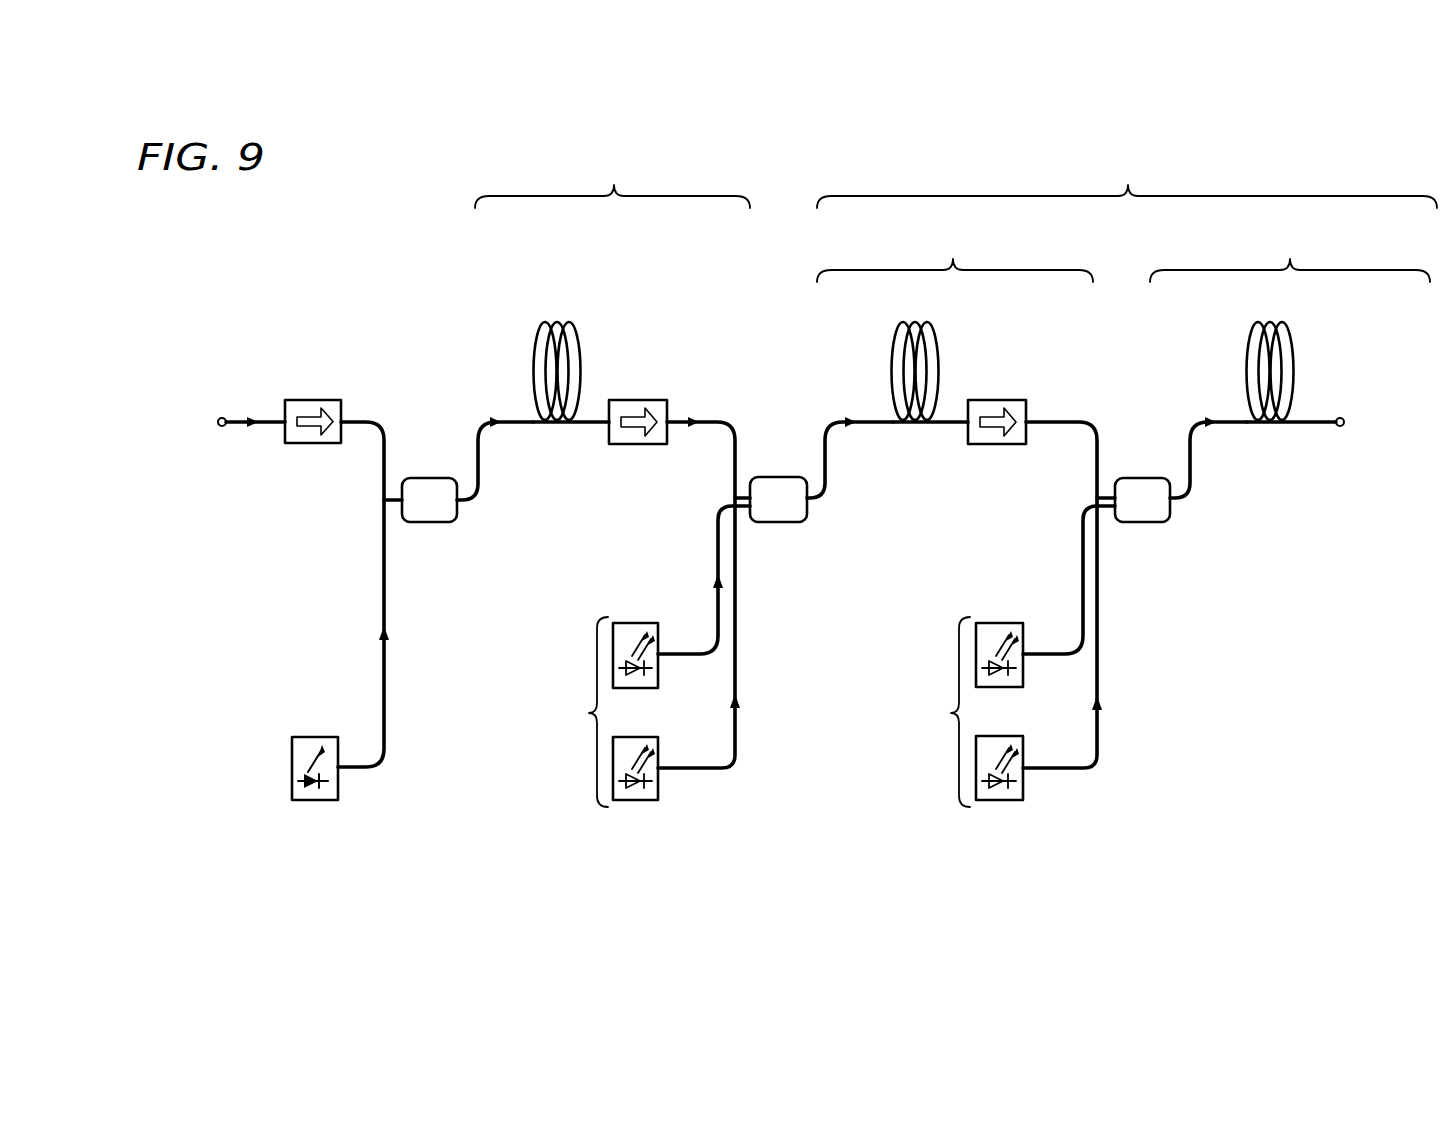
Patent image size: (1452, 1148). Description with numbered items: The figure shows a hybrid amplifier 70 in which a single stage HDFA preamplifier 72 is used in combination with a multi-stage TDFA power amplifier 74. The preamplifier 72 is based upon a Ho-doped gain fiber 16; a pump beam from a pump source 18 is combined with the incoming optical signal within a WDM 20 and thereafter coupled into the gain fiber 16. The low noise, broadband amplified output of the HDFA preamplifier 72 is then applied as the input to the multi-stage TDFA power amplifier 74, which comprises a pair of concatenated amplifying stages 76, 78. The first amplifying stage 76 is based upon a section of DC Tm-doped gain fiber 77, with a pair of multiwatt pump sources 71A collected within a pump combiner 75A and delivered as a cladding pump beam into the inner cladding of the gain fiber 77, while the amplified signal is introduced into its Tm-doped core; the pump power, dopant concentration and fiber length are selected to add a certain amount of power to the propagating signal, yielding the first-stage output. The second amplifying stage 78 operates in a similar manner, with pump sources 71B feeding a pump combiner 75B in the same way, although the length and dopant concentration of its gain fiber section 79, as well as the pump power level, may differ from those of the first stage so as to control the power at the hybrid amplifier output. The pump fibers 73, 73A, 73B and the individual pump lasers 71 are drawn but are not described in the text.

The hybrid amplifier 70 is at (208, 224).
The pump source 18 is at (292, 767).
The WDM 20 is at (430, 478).
The HDFA preamplifier 72 is at (624, 177).
The Ho-doped gain fiber 16 is at (580, 352).
The pump combiner fiber 73 is at (718, 534).
The pump fiber 73A is at (738, 727).
The pump fiber 73B is at (1100, 727).
The pump lasers P2 71 is at (635, 715).
The pump sources 71A is at (583, 726).
The pump sources 71B is at (946, 726).
The pump combiner 75A is at (778, 478).
The pump combiner 75B is at (1142, 478).
The multi-stage TDFA power amplifier 74 is at (1140, 177).
The first amplifying stage 76 is at (955, 254).
The DC Tm-doped gain fiber 77 is at (938, 352).
The second amplifying stage 78 is at (1290, 254).
The gain fiber section 79 is at (1292, 352).